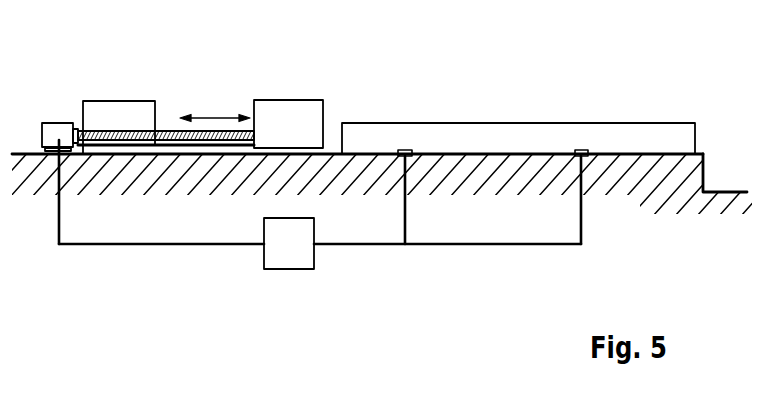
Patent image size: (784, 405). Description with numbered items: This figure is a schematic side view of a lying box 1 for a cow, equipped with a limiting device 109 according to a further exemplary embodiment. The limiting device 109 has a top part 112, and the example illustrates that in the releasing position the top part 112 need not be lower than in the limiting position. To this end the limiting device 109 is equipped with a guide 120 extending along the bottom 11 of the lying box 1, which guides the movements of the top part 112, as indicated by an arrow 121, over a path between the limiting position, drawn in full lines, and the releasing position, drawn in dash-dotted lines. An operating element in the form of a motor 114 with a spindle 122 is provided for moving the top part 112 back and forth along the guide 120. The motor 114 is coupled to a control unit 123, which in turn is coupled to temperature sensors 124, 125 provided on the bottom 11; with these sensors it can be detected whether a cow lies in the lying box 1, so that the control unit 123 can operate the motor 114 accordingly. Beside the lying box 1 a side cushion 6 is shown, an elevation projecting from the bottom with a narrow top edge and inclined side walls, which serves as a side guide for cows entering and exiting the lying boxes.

The lying box 1 is at (706, 97).
The side cushion 6 is at (471, 133).
The bottom 11 is at (535, 152).
The limiting device 109 is at (316, 68).
The top part 112 is at (107, 101).
The motor 114 is at (51, 130).
The guide 120 is at (170, 150).
The arrow 121 is at (216, 117).
The spindle 122 is at (171, 146).
The control unit 123 is at (289, 255).
The temperature sensor 124 is at (405, 150).
The position sensor 125 is at (581, 150).